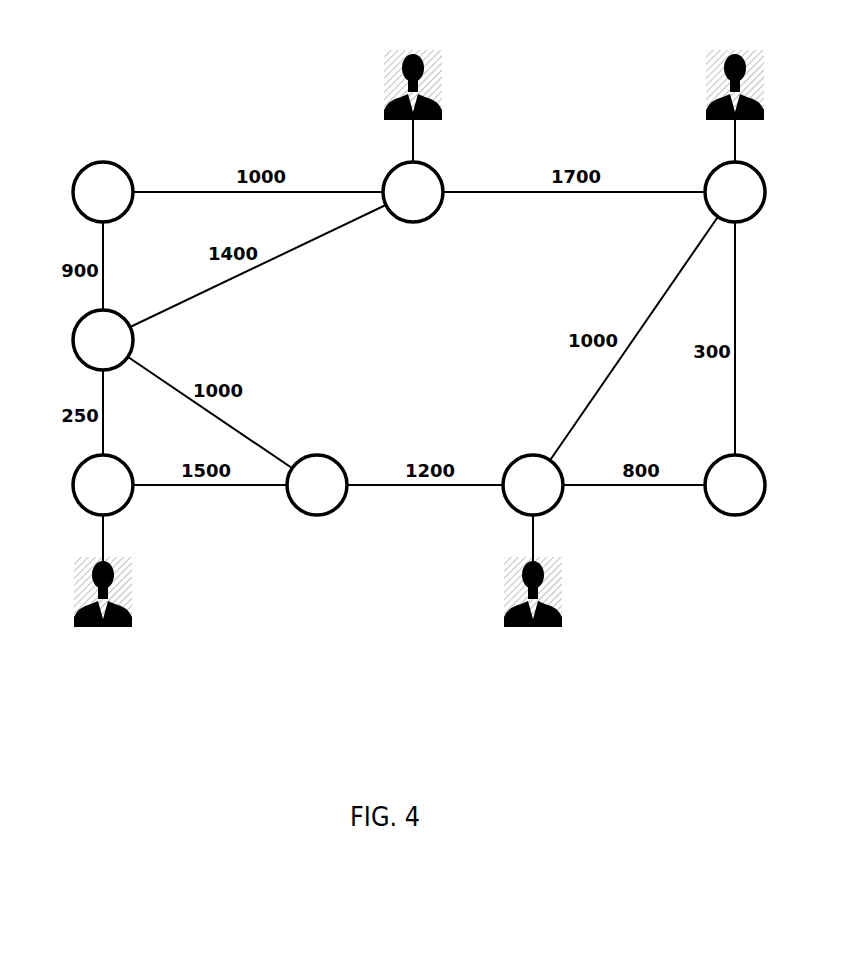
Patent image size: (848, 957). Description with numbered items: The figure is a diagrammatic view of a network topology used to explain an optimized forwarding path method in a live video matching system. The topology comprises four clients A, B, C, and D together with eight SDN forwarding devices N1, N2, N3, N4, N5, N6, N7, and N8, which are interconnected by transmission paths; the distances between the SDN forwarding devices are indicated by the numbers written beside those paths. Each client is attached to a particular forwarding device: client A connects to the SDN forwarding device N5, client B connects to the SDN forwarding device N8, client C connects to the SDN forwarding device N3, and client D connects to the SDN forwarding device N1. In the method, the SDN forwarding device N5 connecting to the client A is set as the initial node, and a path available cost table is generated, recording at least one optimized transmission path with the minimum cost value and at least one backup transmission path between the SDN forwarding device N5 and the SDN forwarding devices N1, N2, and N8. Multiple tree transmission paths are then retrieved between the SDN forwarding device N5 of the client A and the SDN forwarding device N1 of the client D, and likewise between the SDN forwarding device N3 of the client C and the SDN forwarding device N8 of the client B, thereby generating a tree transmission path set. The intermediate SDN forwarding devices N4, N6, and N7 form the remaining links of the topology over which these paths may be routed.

The SDN forwarding device N1 is at (735, 192).
The SDN forwarding device N2 is at (735, 485).
The SDN forwarding device N3 is at (533, 485).
The SDN forwarding device N4 is at (317, 485).
The SDN forwarding device N5 is at (103, 485).
The SDN forwarding device N6 is at (103, 340).
The SDN forwarding device N7 is at (103, 192).
The SDN forwarding device N8 is at (413, 192).
The client A is at (73, 603).
The client B is at (379, 91).
The client C is at (563, 588).
The client D is at (705, 93).